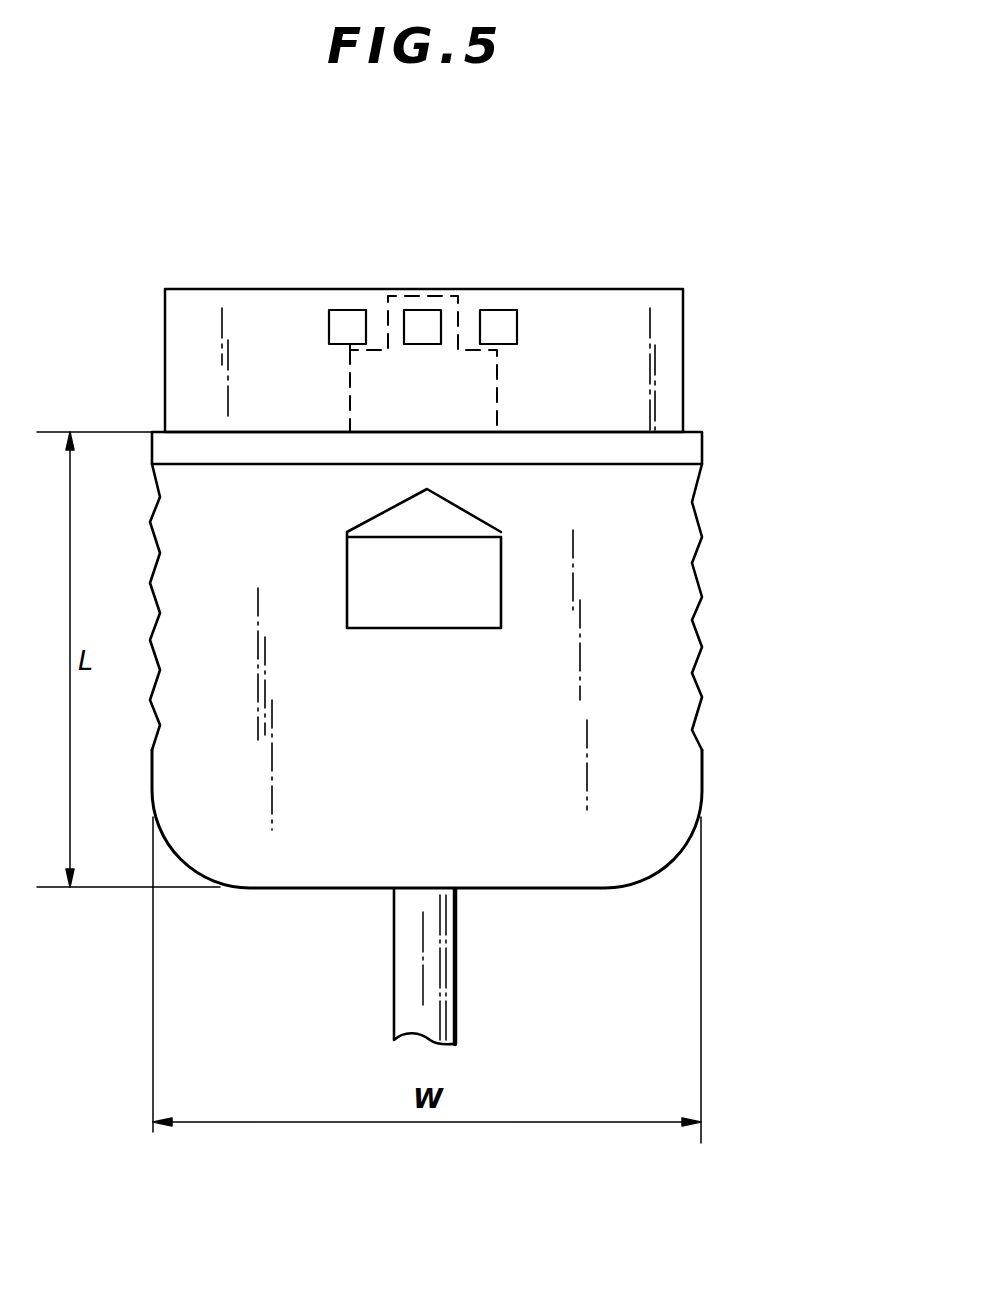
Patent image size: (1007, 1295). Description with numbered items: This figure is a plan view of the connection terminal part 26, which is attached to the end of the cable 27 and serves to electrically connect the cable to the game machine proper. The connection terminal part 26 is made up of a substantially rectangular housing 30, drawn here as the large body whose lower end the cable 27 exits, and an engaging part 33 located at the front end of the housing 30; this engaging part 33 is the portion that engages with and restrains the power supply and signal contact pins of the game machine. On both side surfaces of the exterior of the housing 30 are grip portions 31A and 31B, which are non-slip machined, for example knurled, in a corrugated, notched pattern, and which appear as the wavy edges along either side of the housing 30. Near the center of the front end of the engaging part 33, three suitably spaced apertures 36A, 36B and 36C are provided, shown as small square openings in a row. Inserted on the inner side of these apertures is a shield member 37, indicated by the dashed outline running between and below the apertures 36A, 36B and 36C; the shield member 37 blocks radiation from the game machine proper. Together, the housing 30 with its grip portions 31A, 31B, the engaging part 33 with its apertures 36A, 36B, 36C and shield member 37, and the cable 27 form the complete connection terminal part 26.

The connection terminal part 26 is at (471, 625).
The cable 27 is at (437, 963).
The housing 30 is at (450, 660).
The grip portion 31A is at (702, 693).
The grip portion 31B is at (158, 673).
The engaging part 33 is at (508, 319).
The aperture 36A is at (497, 318).
The aperture 36B is at (423, 316).
The aperture 36C is at (347, 316).
The shield member 37 is at (479, 363).